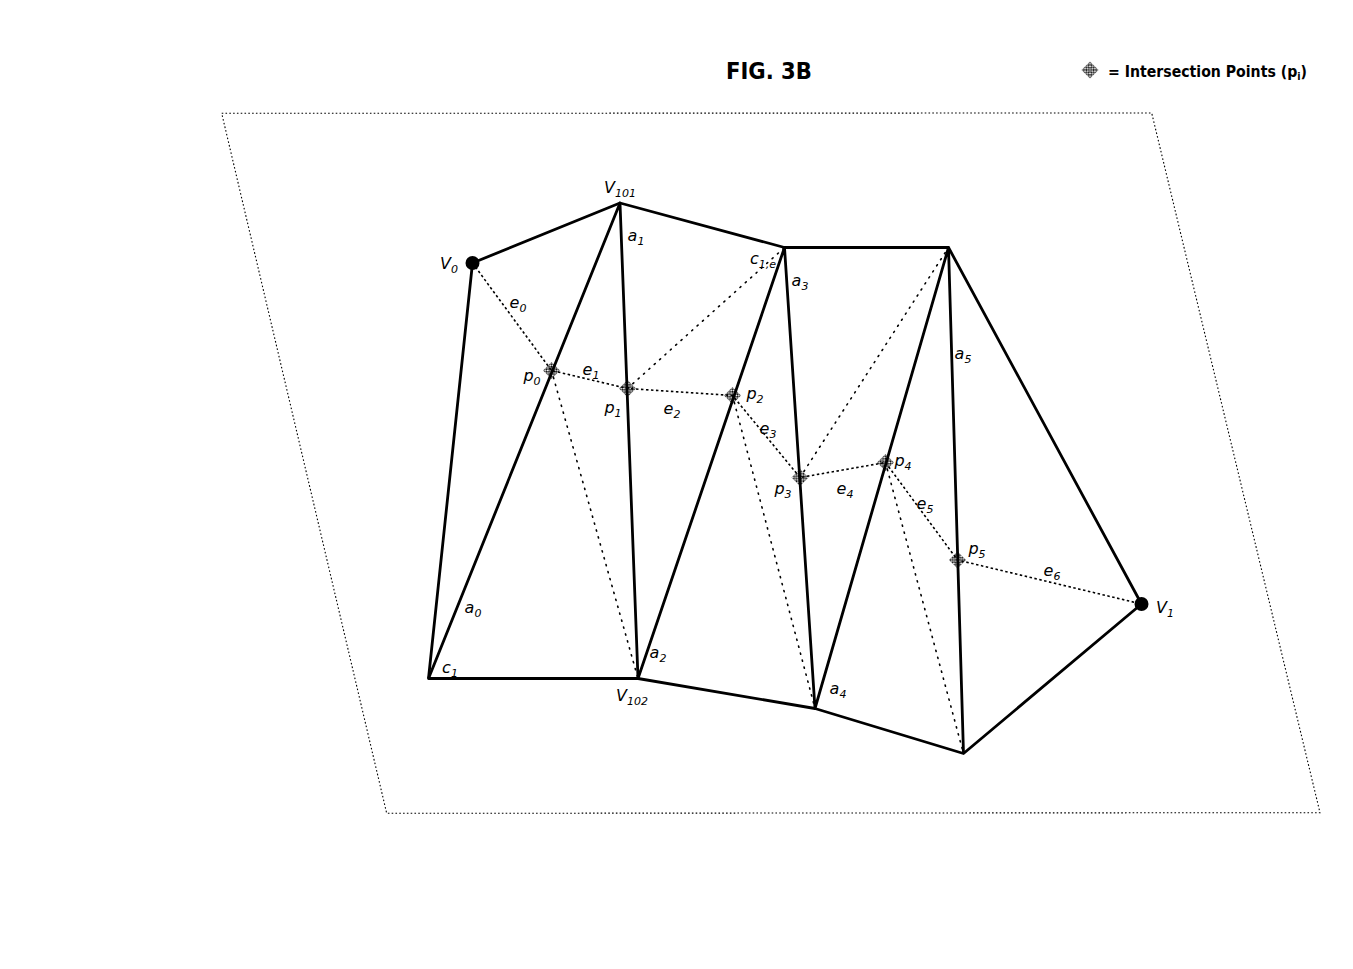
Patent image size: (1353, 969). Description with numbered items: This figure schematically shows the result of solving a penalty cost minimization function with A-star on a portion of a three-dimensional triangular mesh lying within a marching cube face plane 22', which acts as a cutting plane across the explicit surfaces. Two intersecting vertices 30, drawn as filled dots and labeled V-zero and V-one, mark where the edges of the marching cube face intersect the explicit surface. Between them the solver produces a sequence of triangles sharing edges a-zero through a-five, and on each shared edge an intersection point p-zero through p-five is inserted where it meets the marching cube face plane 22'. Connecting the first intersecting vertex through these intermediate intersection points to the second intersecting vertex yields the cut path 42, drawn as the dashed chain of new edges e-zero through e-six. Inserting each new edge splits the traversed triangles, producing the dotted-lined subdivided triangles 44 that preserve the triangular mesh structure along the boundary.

The marching cube face plane 22' is at (771, 463).
The intersecting vertices 30 is at (897, 321).
The cut path 42 is at (205, 41).
The subdivided triangles 44 is at (205, 70).